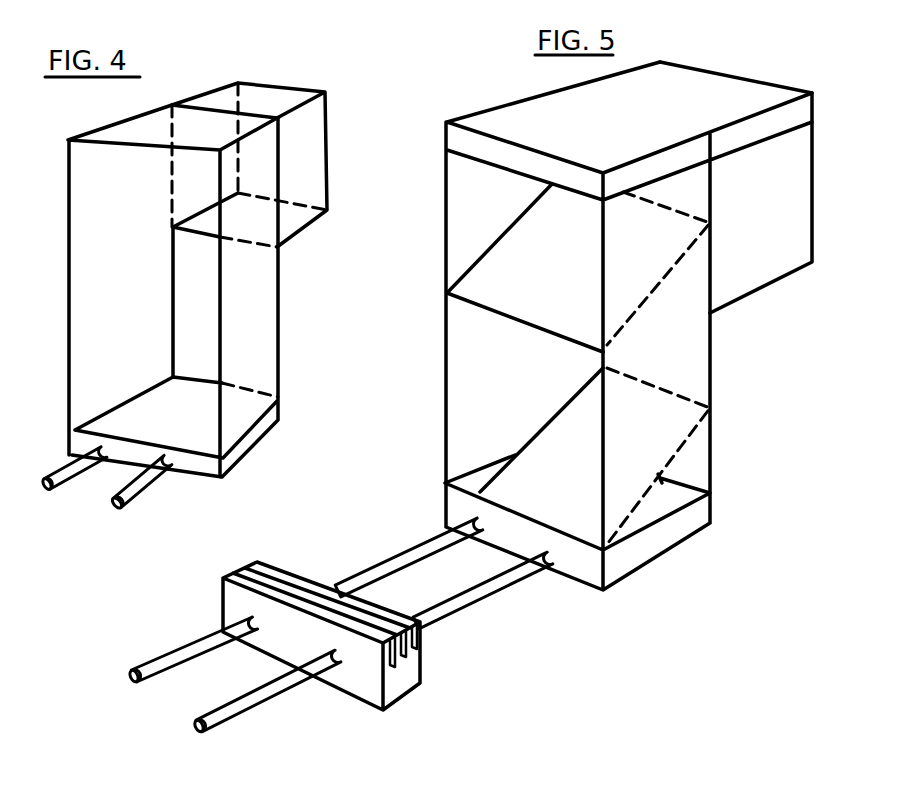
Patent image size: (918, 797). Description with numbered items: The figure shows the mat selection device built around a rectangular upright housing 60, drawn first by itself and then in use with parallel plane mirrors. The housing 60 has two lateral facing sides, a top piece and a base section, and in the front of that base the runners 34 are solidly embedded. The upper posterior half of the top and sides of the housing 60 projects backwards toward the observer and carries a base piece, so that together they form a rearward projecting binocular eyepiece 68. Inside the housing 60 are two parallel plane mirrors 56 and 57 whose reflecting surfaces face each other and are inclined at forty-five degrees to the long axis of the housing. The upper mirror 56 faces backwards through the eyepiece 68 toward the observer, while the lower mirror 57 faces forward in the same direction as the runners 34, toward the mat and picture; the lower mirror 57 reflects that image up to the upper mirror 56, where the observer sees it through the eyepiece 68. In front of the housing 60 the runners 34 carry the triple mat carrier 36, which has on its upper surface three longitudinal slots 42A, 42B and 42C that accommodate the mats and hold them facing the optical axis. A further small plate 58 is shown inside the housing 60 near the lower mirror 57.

In FIG. 4, the runners 34 is at (118, 508).
In FIG. 5, the runners 34 is at (518, 577).
In FIG. 5, the triple mat carrier 36 is at (343, 675).
In FIG. 5, the slot 42A is at (420, 642).
In FIG. 5, the slot 42B is at (415, 660).
In FIG. 5, the slot 42C is at (413, 680).
In FIG. 5, the upper plane mirror 56 is at (528, 263).
In FIG. 5, the lower plane mirror 57 is at (670, 427).
In FIG. 5, the reflector plate 58 is at (668, 330).
In FIG. 4, the rectangular upright housing 60 is at (110, 247).
In FIG. 5, the rectangular upright housing 60 is at (483, 368).
In FIG. 4, the binocular eyepiece 68 is at (307, 138).
In FIG. 5, the binocular eyepiece 68 is at (793, 188).